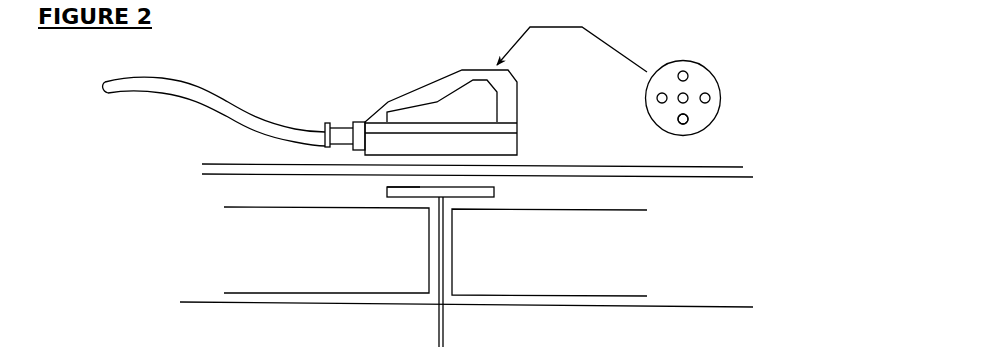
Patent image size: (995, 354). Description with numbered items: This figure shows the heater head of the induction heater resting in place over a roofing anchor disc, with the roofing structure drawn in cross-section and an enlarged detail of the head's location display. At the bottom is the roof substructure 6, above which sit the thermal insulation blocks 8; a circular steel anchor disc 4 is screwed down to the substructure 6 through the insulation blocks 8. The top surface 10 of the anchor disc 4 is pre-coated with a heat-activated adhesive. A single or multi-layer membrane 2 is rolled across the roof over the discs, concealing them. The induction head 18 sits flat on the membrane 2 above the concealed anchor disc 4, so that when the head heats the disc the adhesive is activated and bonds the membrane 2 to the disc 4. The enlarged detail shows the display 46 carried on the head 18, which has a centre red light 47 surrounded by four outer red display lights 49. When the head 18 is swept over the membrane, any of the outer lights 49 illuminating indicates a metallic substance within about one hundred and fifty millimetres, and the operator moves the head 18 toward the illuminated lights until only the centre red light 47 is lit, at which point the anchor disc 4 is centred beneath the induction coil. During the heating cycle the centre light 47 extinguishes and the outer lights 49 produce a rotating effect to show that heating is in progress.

The membrane 2 is at (200, 172).
The anchor disc 4 is at (498, 193).
The roof substructure 6 is at (697, 308).
The thermal insulation block 8 is at (474, 245).
The top surface of anchor disc 10 is at (402, 183).
The induction head 18 is at (427, 80).
The display 46 is at (722, 65).
The centre red light 47 is at (675, 103).
The outer red display lights 49 is at (692, 120).